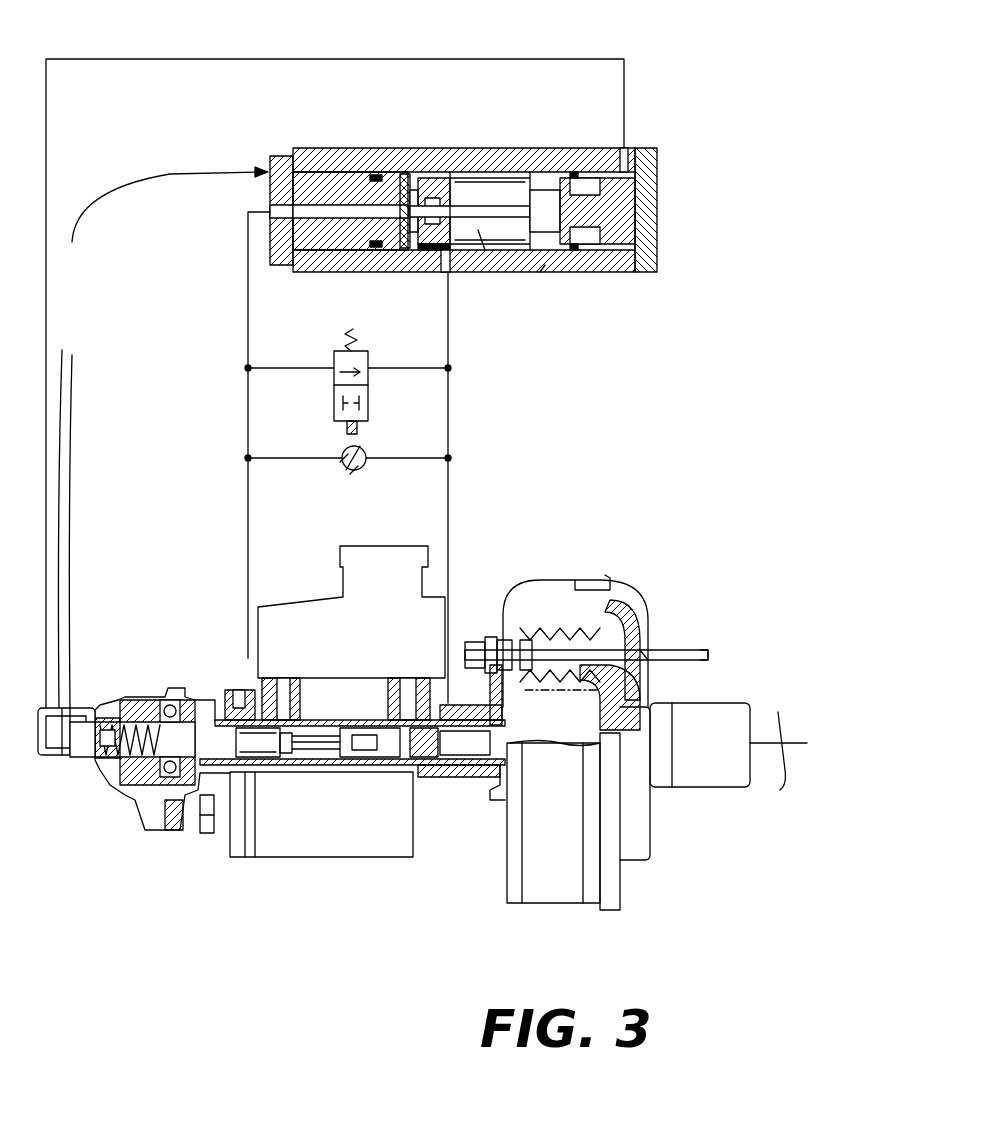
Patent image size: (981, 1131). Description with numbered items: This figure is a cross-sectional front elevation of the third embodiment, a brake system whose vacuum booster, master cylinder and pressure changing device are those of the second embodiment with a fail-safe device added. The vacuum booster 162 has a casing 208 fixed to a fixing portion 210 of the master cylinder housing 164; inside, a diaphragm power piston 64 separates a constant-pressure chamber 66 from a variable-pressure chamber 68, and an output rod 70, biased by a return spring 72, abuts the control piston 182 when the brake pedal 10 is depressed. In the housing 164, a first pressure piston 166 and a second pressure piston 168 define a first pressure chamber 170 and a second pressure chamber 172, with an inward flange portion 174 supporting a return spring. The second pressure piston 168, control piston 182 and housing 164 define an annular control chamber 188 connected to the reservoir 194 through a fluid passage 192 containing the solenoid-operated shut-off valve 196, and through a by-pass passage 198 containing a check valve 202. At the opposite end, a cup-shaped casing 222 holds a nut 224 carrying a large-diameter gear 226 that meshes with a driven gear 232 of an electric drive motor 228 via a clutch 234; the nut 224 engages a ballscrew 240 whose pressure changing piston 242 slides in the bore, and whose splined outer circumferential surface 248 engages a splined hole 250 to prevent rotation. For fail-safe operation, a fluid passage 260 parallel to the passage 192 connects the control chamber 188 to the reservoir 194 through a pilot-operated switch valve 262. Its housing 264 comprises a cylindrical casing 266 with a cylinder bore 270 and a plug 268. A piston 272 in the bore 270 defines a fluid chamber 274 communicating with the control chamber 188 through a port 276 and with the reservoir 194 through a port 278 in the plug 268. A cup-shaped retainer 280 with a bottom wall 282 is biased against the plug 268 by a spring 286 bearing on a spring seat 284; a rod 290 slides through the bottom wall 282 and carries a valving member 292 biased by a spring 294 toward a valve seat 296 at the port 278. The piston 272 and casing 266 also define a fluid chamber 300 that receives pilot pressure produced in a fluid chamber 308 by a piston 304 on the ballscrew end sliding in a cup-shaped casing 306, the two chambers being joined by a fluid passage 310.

The brake pedal 10 is at (728, 758).
The power piston 64 is at (632, 604).
The constant-pressure chamber 66 is at (525, 597).
The variable-pressure chamber 68 is at (650, 680).
The output rod 70 is at (561, 745).
The return spring 72 is at (592, 700).
The vacuum booster 162 is at (622, 902).
The housing 164 is at (418, 772).
The first pressure piston 166 is at (306, 766).
The second pressure piston 168 is at (446, 766).
The first pressure chamber 170 is at (274, 766).
The second pressure chamber 172 is at (390, 766).
The inward flange portion 174 is at (218, 715).
The control piston 182 is at (476, 778).
The annular control chamber 188 is at (460, 766).
The fluid passage 192 is at (294, 369).
The reservoir 194 is at (292, 607).
The solenoid-operated shut-off valve 196 is at (369, 397).
The by-pass passage 198 is at (402, 459).
The check valve 202 is at (346, 466).
The casing 208 is at (546, 580).
The fixing portion 210 is at (493, 640).
The cup-shaped casing 222 is at (118, 702).
The nut 224 is at (146, 715).
The large-diameter gear 226 is at (186, 698).
The electric drive motor 228 is at (343, 785).
The driven gear 232 is at (178, 832).
The clutch 234 is at (210, 835).
The ballscrew 240 is at (138, 790).
The pressure changing piston 242 is at (250, 766).
The splined outer circumferential surface 248 is at (80, 765).
The splined hole 250 is at (90, 722).
The fluid passage 260 is at (448, 345).
The pilot-operated switch valve 262 is at (160, 216).
The housing 264 is at (675, 153).
The cylindrical casing 266 is at (545, 266).
The plug 268 is at (270, 158).
The cylinder bore 270 is at (540, 176).
The piston 272 is at (585, 255).
The fluid chamber 274 is at (492, 236).
The port 276 is at (448, 264).
The port 278 is at (345, 200).
The cup-shaped retainer 280 is at (418, 178).
The bottom wall 282 is at (450, 200).
The spring seat 284 is at (522, 180).
The spring 286 is at (508, 190).
The rod 290 is at (470, 205).
The valving member 292 is at (416, 258).
The spring 294 is at (452, 232).
The valve seat 296 is at (405, 195).
The fluid chamber 300 is at (625, 245).
The piston 304 is at (72, 360).
The cup-shaped casing 306 is at (44, 758).
The fluid chamber 308 is at (62, 340).
The fluid passage 310 is at (130, 59).